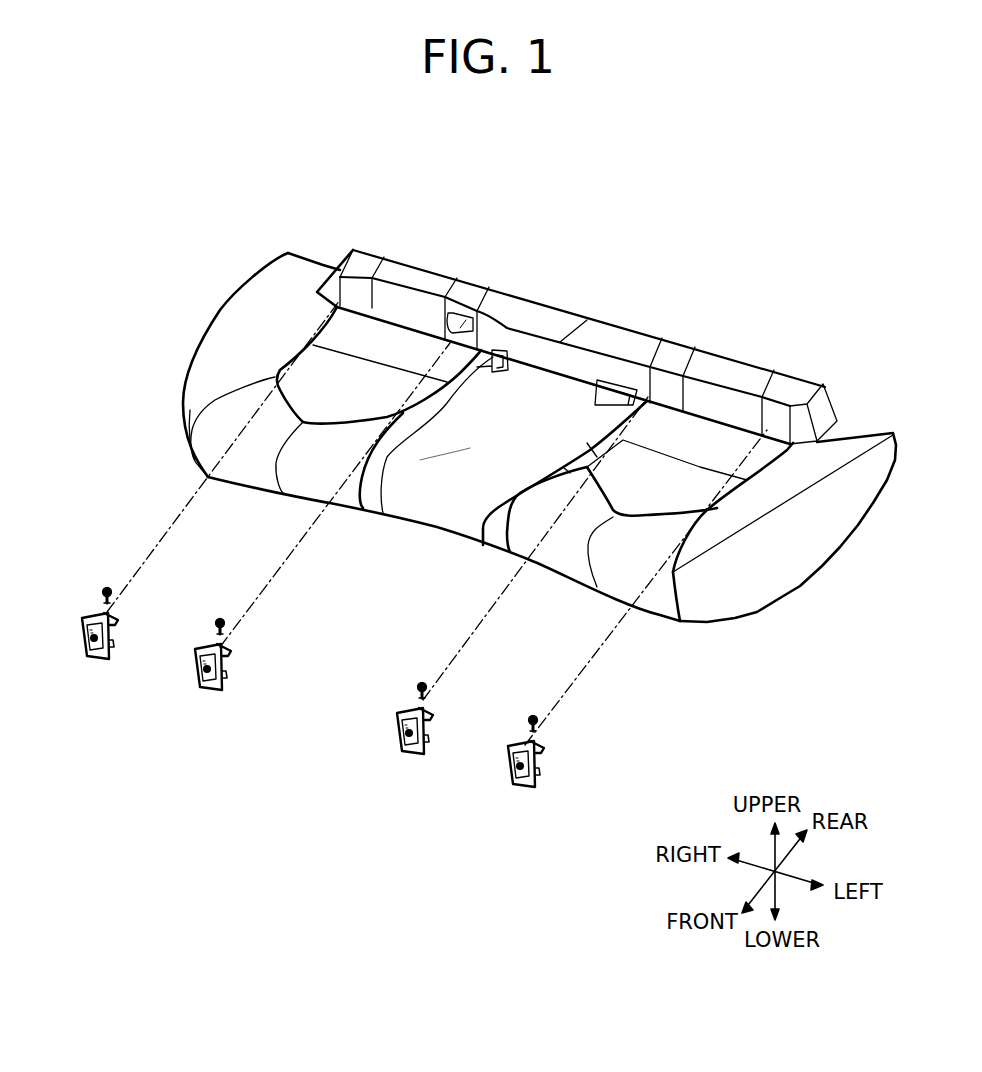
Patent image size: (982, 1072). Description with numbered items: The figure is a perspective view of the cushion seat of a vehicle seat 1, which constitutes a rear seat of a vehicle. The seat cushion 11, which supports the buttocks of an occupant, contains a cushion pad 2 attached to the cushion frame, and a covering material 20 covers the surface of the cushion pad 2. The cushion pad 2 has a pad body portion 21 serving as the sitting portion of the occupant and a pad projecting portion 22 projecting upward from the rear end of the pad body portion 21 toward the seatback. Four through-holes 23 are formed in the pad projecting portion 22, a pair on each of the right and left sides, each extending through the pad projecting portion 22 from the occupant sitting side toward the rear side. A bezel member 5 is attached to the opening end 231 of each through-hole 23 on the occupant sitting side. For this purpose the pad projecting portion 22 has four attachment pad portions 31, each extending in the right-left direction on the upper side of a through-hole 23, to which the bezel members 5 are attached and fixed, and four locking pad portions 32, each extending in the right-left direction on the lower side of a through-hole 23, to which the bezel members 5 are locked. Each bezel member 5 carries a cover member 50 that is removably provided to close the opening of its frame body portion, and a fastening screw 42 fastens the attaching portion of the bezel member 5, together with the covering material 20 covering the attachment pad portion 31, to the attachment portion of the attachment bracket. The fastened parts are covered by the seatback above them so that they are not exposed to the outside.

The vehicle seat 1 is at (160, 240).
The cushion pad 2 is at (797, 482).
The seat cushion 11 is at (777, 598).
The covering material 20 is at (215, 348).
The pad body portion 21 is at (435, 502).
The pad projecting portion 22 is at (560, 320).
The through-hole 23 is at (352, 283).
The opening end 231 is at (353, 293).
The attachment pad portion 31 is at (476, 296).
The locking pad portion 32 is at (488, 338).
The bezel member 5 is at (114, 657).
The fastening screw 42 is at (107, 584).
The cover member 50 is at (87, 657).